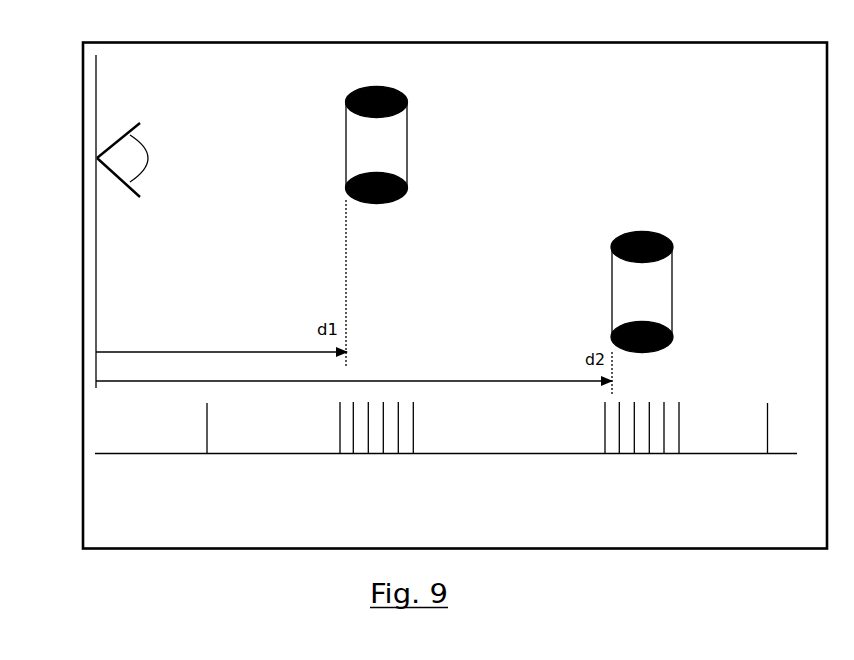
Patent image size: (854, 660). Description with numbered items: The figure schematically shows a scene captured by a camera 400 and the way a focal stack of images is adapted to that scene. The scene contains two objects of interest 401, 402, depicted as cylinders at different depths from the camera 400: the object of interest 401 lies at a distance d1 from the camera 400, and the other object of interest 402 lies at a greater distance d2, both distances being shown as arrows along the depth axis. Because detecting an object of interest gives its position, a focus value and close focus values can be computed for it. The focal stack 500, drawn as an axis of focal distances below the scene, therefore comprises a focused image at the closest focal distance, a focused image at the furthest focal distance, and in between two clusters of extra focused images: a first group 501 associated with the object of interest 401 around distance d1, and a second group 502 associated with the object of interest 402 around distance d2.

The camera 400 is at (97, 159).
The object of interest 401 is at (397, 87).
The object of interest 402 is at (672, 238).
The focal stack 500 is at (123, 457).
The first group of focused images 501 is at (420, 460).
The second group of focused images 502 is at (684, 460).